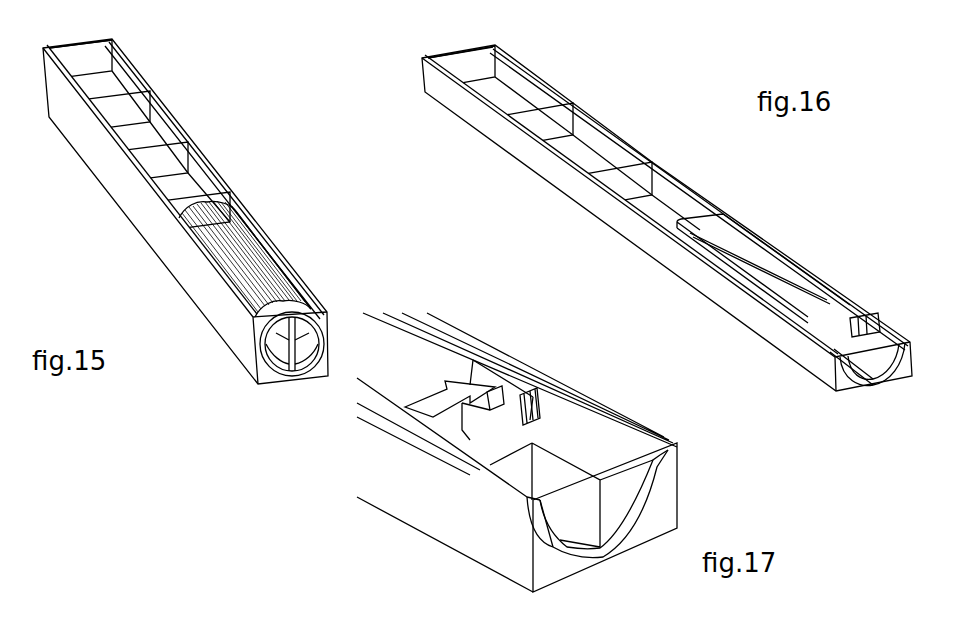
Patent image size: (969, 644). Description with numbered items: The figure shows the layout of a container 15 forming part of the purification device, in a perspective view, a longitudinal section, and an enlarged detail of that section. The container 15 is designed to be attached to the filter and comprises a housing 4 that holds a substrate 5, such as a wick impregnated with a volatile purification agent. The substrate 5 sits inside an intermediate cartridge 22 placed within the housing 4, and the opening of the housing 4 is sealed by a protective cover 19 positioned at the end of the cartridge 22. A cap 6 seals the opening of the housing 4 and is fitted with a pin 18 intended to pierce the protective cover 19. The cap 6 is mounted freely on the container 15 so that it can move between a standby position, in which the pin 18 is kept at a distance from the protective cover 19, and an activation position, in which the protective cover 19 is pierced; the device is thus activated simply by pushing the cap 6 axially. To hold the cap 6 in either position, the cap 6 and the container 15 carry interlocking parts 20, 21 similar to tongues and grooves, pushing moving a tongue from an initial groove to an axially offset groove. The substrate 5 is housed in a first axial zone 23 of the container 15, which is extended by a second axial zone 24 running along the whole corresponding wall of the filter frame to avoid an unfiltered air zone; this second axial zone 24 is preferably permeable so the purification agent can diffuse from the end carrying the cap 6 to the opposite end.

In FIG. 15, the housing 4 is at (268, 254).
In FIG. 16, the housing 4 is at (795, 320).
In FIG. 16, the substrate 5 is at (757, 259).
In FIG. 15, the cap 6 is at (322, 327).
In FIG. 16, the cap 6 is at (903, 334).
In FIG. 17, the cap 6 is at (662, 495).
In FIG. 15, the container 15 is at (175, 116).
In FIG. 16, the container 15 is at (613, 121).
In FIG. 16, the pin 18 is at (867, 318).
In FIG. 17, the pin 18 is at (502, 408).
In FIG. 17, the protective cover 19 is at (535, 392).
In FIG. 17, the interlocking part 20 is at (530, 500).
In FIG. 17, the interlocking part 21 is at (537, 505).
In FIG. 15, the intermediate cartridge 22 is at (242, 233).
In FIG. 16, the intermediate cartridge 22 is at (842, 300).
In FIG. 17, the intermediate cartridge 22 is at (475, 362).
In FIG. 15, the first axial zone 23 is at (168, 297).
In FIG. 16, the first axial zone 23 is at (657, 283).
In FIG. 15, the second axial zone 24 is at (75, 178).
In FIG. 16, the second axial zone 24 is at (512, 185).